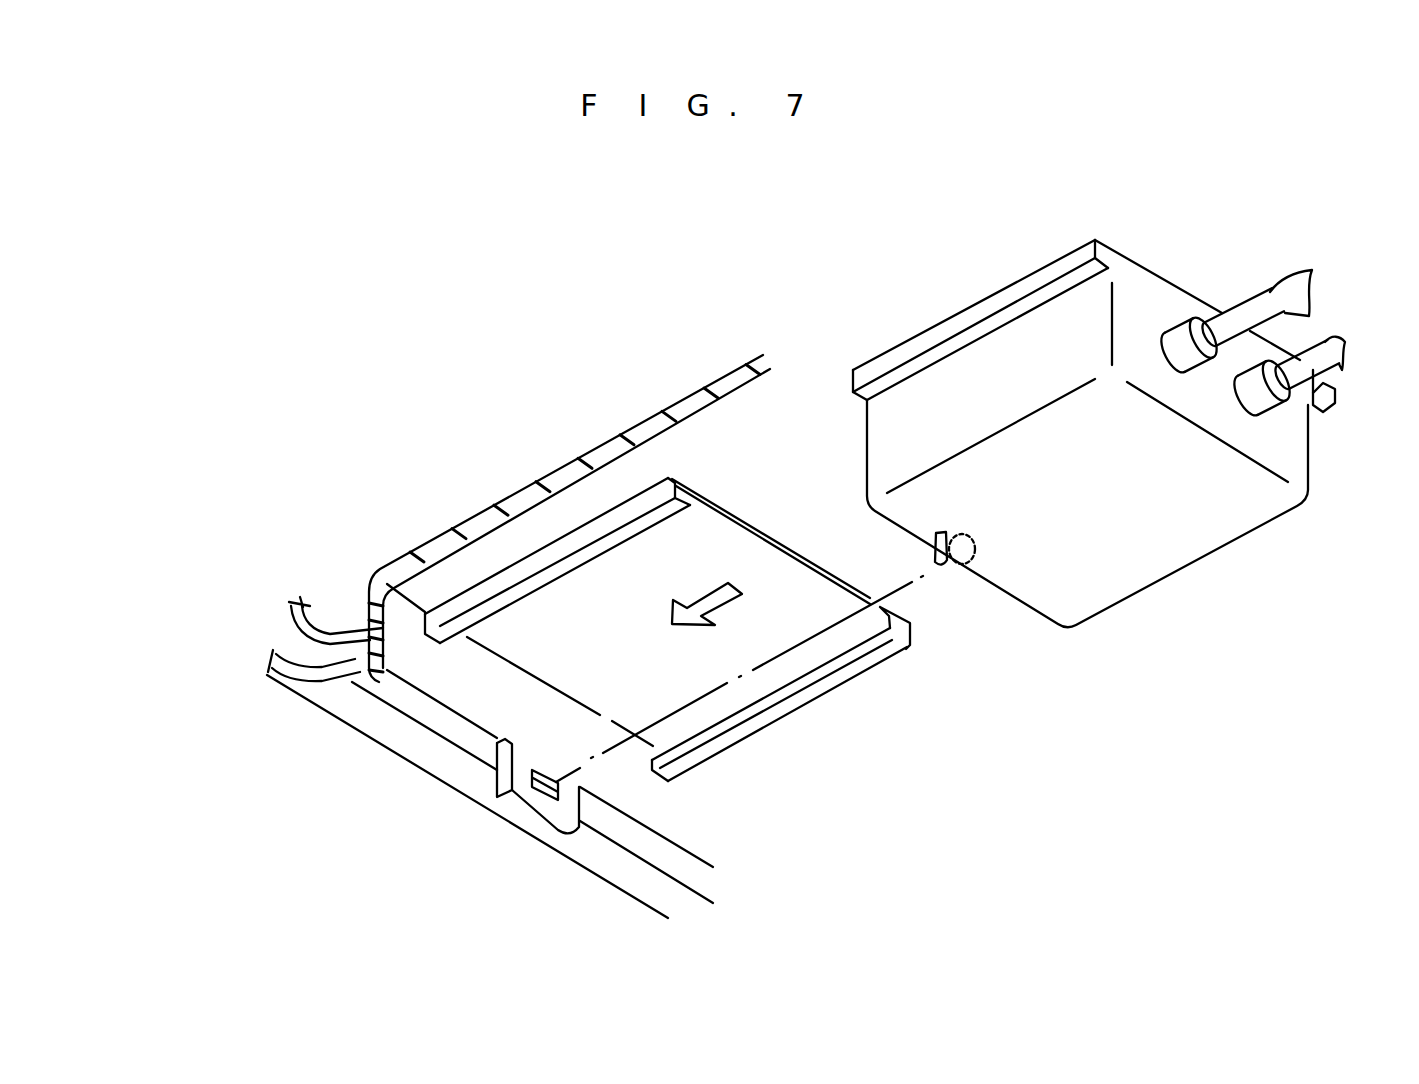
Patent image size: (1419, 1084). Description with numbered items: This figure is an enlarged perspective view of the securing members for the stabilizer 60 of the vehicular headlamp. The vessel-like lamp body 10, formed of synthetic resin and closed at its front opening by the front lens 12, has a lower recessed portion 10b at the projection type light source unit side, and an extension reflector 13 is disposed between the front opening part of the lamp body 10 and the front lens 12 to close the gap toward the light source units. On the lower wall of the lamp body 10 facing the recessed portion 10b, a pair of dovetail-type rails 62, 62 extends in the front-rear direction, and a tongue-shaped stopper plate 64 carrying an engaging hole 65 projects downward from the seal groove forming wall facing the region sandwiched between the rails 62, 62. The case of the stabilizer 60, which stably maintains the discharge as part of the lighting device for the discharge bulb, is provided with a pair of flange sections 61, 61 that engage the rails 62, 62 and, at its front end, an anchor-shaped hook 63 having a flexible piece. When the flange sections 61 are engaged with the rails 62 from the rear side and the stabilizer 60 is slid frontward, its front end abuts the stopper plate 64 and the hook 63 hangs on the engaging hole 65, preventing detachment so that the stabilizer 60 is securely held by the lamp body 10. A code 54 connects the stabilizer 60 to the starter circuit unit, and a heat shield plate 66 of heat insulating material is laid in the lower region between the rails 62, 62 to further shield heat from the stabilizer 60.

The lamp body 10 is at (457, 527).
The recessed portion 10b is at (624, 656).
The front lens 12 is at (362, 732).
The extension reflector 13 is at (288, 614).
The code 54 is at (1325, 342).
The stabilizer 60 is at (963, 378).
The flange sections 61 is at (1060, 268).
The rails 62 is at (620, 515).
The hook 63 is at (943, 573).
The stopper plate 64 is at (525, 786).
The engaging hole 65 is at (563, 787).
The heat shield plate 66 is at (700, 713).